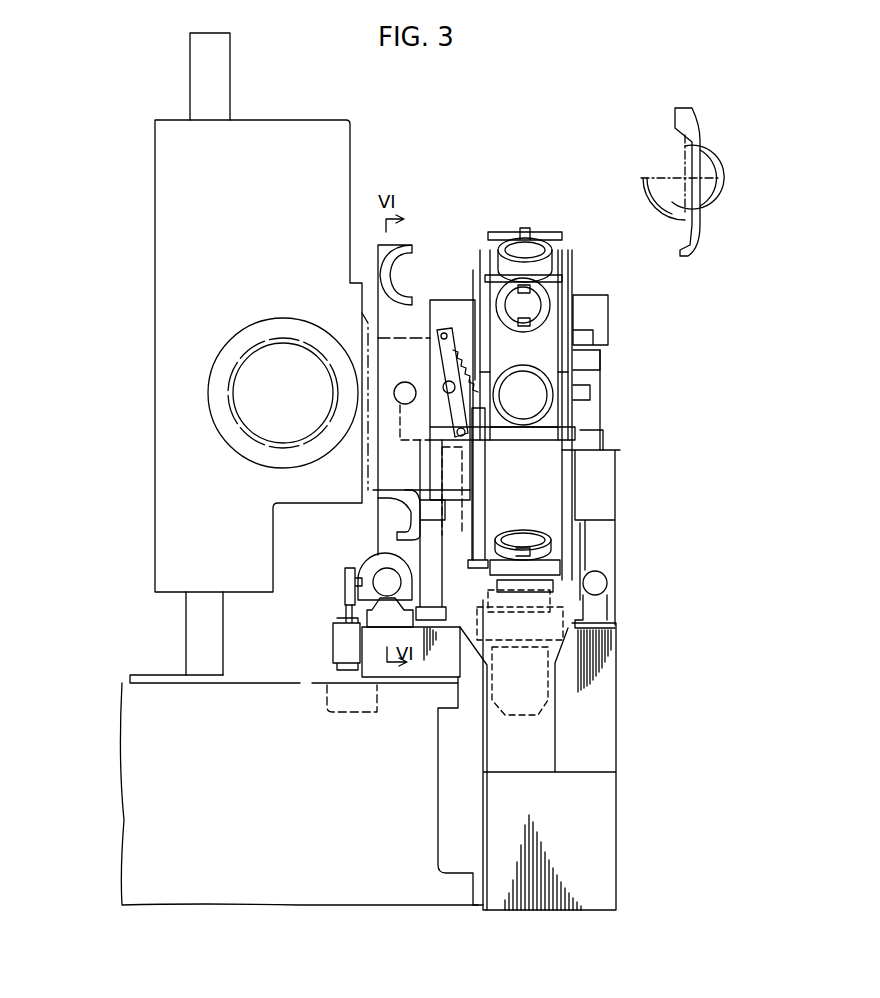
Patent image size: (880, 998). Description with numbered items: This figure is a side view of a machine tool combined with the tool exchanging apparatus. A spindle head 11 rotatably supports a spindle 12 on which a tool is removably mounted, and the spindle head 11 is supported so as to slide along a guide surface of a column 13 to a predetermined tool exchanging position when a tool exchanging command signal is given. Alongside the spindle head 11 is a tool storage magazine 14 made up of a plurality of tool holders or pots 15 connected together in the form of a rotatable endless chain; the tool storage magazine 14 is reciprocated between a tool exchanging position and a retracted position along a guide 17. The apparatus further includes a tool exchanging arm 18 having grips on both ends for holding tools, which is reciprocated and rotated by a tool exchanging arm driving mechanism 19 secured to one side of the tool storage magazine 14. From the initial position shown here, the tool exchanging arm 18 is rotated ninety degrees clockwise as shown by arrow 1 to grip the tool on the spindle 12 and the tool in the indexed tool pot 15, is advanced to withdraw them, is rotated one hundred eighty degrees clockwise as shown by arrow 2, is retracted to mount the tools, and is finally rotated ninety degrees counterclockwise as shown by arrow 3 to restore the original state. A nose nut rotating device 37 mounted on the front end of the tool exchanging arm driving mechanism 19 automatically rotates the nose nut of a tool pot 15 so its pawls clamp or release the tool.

The arrow 1 is at (700, 160).
The arrow 2 is at (710, 190).
The arrow 3 is at (646, 190).
The spindle head 11 is at (255, 135).
The spindle 12 is at (247, 407).
The column 13 is at (177, 65).
The tool storage magazine 14 is at (555, 478).
The tool holder or pot 15 is at (538, 228).
The guide 17 is at (604, 698).
The tool exchanging arm 18 is at (400, 250).
The tool exchanging arm driving mechanism 19 is at (448, 298).
The nose nut rotating device 37 is at (455, 403).